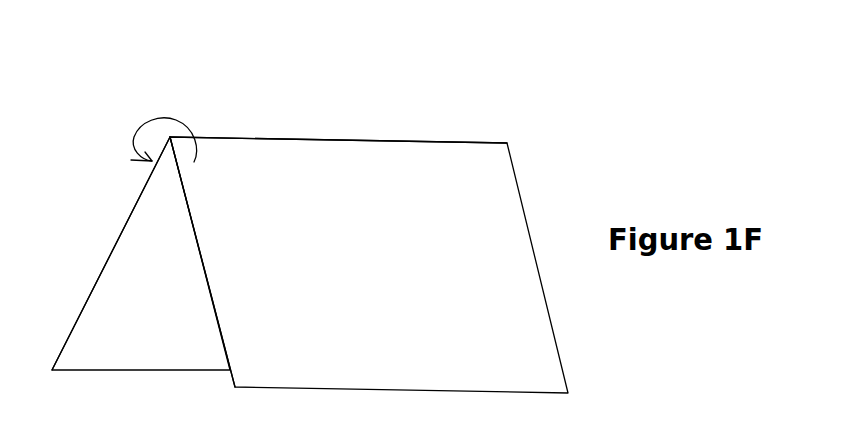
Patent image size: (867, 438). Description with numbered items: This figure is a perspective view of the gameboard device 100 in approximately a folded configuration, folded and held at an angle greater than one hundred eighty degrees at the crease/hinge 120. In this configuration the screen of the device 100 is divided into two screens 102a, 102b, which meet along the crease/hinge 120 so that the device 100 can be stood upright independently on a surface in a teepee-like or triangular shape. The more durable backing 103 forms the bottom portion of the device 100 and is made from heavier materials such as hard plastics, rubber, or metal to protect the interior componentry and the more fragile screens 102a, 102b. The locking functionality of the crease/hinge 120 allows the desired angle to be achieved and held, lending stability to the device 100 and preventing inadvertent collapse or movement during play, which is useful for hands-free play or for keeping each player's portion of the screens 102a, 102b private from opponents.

The gameboard device 100 is at (552, 91).
The screen 102a is at (117, 223).
The screen 102b is at (393, 272).
The backing 103 is at (183, 313).
The crease/hinge 120 is at (267, 142).